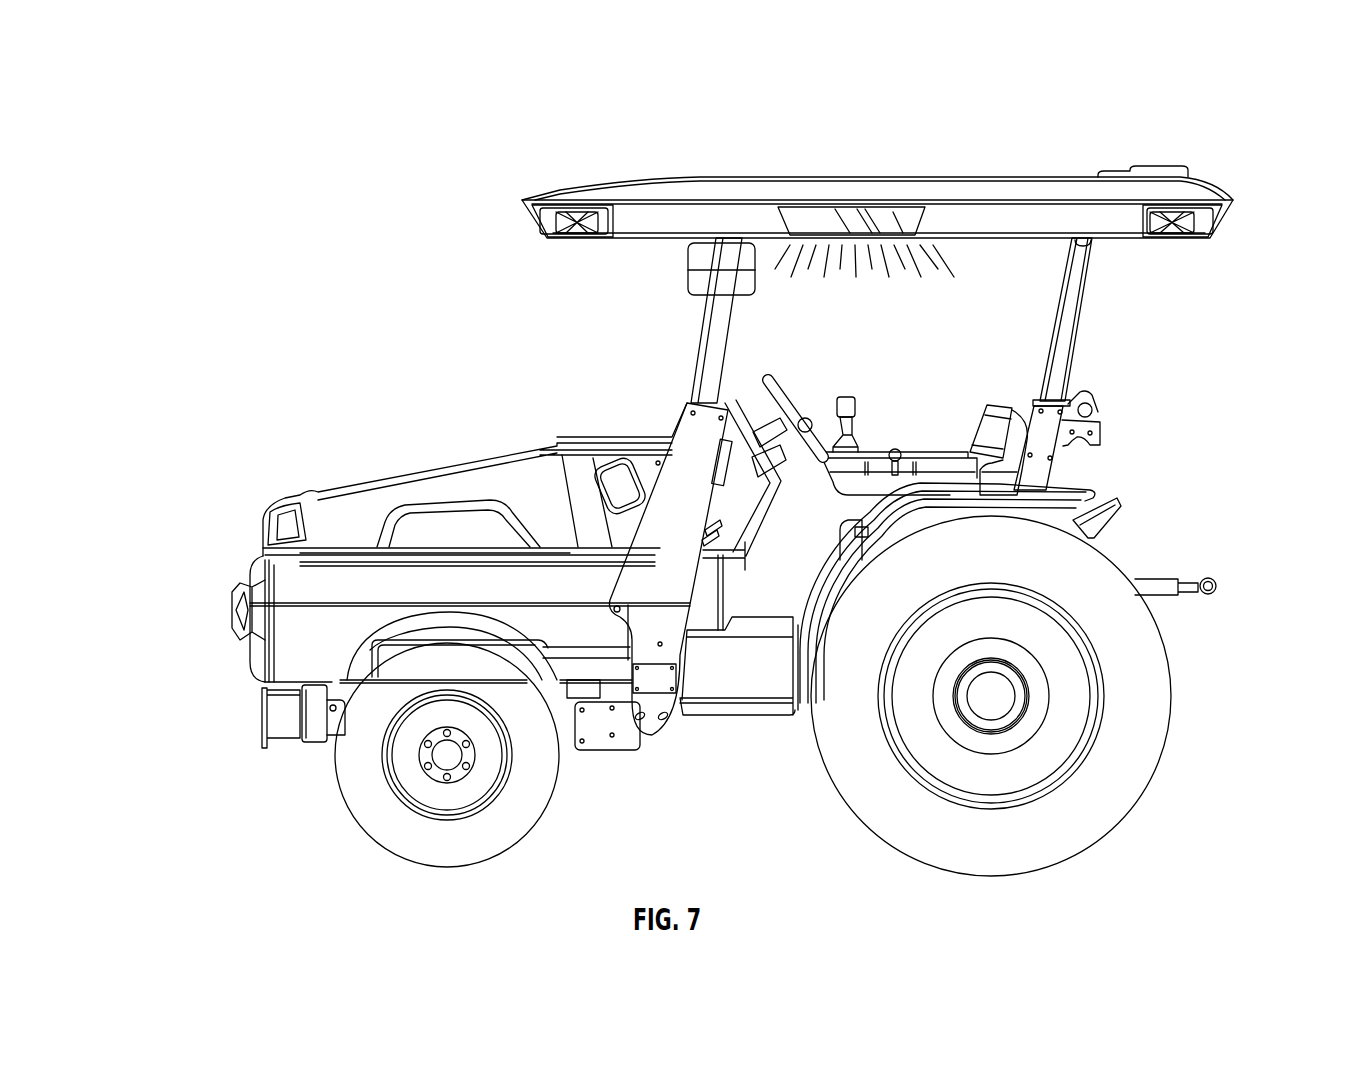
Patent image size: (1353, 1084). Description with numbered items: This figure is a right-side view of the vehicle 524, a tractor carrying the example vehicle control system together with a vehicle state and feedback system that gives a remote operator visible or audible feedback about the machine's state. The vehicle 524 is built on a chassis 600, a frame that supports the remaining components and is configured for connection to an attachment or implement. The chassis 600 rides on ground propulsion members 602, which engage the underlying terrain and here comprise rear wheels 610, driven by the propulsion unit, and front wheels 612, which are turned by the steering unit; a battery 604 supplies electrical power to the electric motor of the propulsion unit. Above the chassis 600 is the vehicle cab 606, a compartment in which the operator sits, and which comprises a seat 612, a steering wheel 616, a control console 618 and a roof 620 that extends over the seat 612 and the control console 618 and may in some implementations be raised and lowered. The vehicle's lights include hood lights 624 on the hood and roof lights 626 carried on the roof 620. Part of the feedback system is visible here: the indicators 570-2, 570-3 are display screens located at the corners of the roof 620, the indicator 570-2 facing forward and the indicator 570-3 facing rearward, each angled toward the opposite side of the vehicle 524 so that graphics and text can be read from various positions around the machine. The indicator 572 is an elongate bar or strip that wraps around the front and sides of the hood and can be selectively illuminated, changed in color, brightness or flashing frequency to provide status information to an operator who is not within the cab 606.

The vehicle 524 is at (1022, 145).
The indicator 570-2 is at (600, 205).
The indicator 570-3 is at (1158, 208).
The roof lights 626 is at (895, 217).
The roof 620 is at (1167, 170).
The vehicle cab 606 is at (1104, 293).
The control console 618 is at (670, 415).
The steering wheel 616 is at (778, 382).
The front wheels 612 is at (978, 425).
The hood lights 624 is at (277, 525).
The battery 604 is at (232, 613).
The indicator 572 is at (306, 560).
The chassis 600 is at (577, 683).
The ground propulsion members 602 is at (840, 802).
The rear wheels 610 is at (900, 857).